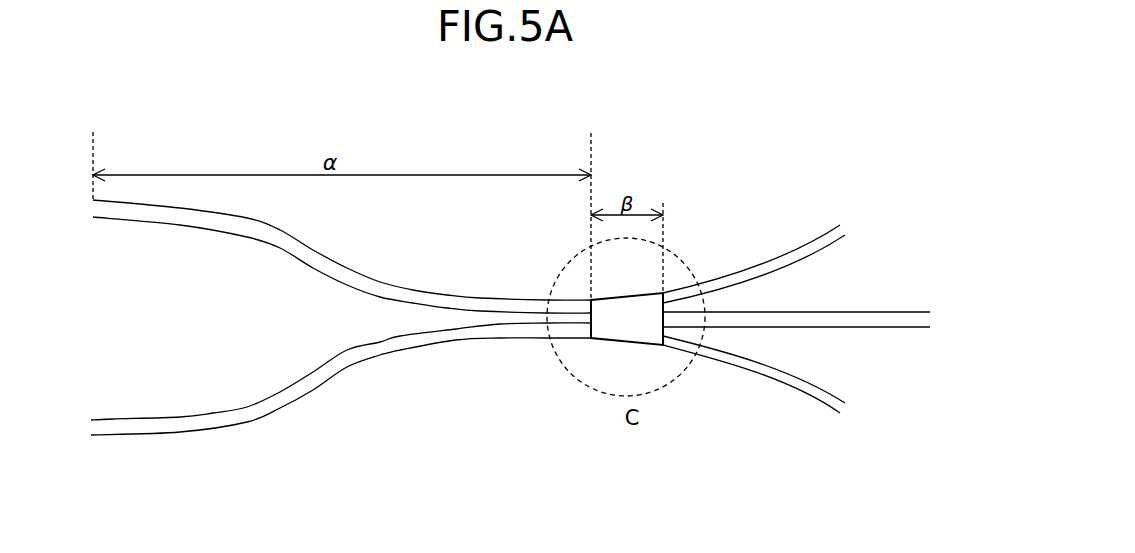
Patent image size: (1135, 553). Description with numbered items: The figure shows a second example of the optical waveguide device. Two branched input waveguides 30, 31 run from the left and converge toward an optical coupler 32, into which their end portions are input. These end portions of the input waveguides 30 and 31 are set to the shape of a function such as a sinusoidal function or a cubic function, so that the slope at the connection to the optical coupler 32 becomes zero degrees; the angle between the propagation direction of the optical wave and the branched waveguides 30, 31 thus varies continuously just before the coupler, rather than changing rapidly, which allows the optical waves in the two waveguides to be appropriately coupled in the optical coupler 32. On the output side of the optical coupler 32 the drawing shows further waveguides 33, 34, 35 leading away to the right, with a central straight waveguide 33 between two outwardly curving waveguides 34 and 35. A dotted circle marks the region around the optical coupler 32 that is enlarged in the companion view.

The input waveguide 30 is at (455, 305).
The input waveguide 31 is at (456, 333).
The optical coupler 32 is at (624, 317).
The center output waveguide 33 is at (827, 320).
The upper output waveguide 34 is at (755, 273).
The lower output waveguide 35 is at (758, 368).